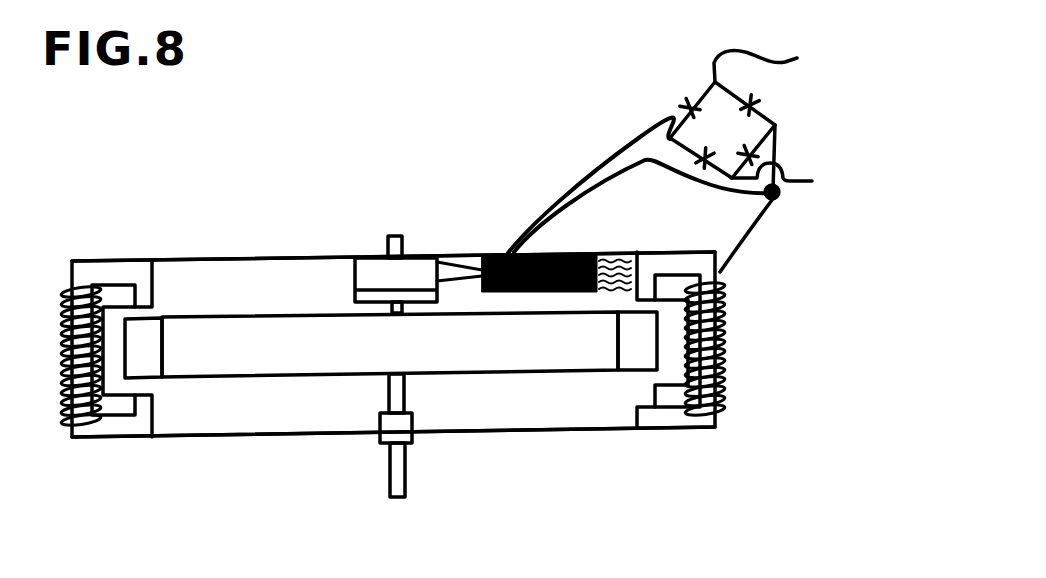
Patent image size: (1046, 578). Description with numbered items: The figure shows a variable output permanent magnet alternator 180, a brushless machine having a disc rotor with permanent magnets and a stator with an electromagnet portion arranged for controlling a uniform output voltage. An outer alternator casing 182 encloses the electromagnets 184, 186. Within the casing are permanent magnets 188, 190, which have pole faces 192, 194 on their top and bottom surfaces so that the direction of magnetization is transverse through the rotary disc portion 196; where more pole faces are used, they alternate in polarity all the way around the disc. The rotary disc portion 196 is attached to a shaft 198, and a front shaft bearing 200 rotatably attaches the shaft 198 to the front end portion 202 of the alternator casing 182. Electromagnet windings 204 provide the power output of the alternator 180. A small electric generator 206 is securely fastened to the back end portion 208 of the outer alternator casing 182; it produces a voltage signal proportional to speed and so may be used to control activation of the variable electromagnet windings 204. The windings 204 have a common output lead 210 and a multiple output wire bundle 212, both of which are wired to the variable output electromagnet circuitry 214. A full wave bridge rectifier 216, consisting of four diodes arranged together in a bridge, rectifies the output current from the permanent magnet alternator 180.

The variable output permanent magnet alternator 180 is at (162, 261).
The outer alternator casing 182 is at (172, 438).
The electromagnet 184 is at (92, 440).
The electromagnet 186 is at (722, 416).
The permanent magnet 188 is at (167, 372).
The permanent magnet 190 is at (617, 355).
The pole face 192 is at (155, 375).
The pole face 194 is at (150, 306).
The rotary disc portion 196 is at (297, 357).
The shaft 198 is at (407, 497).
The front shaft bearing 200 is at (403, 433).
The front end portion 202 is at (612, 428).
The electromagnet windings 204 is at (727, 308).
The small electric generator 206 is at (410, 258).
The back end portion 208 is at (188, 261).
The common output lead 210 is at (752, 245).
The multiple output wire bundle 212 is at (613, 255).
The variable output electromagnet circuitry 214 is at (490, 254).
The full wave bridge rectifier 216 is at (727, 108).